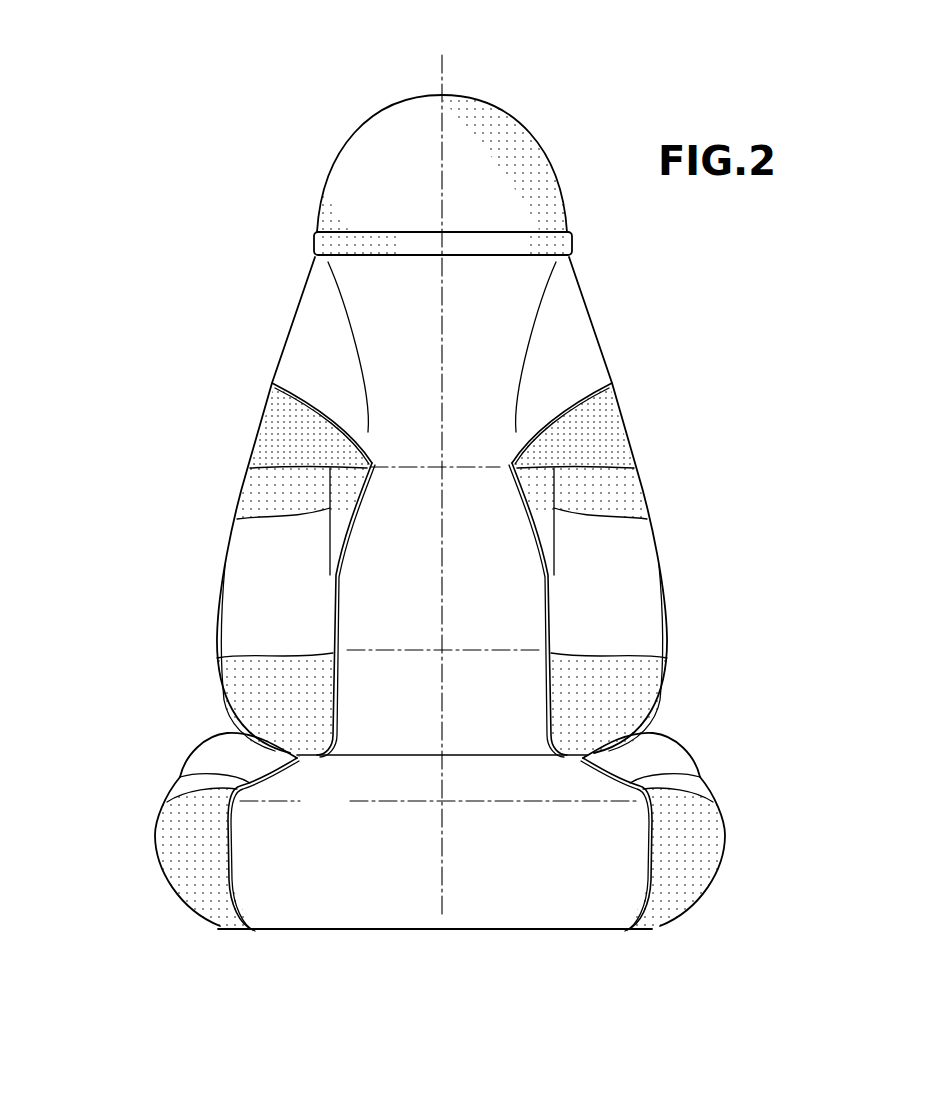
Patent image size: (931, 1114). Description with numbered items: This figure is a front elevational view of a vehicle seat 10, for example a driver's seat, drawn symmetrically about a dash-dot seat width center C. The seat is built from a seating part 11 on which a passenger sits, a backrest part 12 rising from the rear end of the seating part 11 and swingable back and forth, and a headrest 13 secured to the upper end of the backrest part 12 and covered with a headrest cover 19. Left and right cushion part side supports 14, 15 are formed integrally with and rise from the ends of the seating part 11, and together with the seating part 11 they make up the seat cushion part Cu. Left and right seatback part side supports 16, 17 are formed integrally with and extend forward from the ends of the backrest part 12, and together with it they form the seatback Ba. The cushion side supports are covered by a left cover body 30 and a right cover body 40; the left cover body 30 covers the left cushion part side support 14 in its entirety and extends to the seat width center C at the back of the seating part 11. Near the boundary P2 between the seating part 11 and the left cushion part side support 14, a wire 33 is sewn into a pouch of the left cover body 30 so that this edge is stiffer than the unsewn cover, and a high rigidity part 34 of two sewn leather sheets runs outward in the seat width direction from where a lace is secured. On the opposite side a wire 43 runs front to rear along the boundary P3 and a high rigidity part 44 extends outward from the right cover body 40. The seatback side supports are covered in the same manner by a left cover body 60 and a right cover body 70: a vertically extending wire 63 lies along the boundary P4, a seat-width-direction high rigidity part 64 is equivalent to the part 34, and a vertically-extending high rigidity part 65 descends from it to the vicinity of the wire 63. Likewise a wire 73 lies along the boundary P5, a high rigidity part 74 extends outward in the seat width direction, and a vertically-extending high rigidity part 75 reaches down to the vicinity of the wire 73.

The vehicle seat 10 is at (178, 115).
The seating part 11 is at (388, 873).
The backrest part 12 is at (505, 322).
The headrest 13 is at (392, 177).
The left cushion part side support 14 is at (675, 750).
The right cushion part side support 15 is at (208, 748).
The left seatback part side support 16 is at (637, 600).
The right seatback part side support 17 is at (247, 598).
The headrest cover 19 is at (501, 157).
The left cover body 30 is at (702, 890).
The wire 33 is at (607, 780).
The high rigidity part extending in the seat width direction 34 is at (683, 772).
The right cover body 40 is at (177, 888).
The wire 43 is at (273, 780).
The high rigidity part 44 is at (195, 770).
The left cover body 60 is at (641, 495).
The wire 63 is at (657, 662).
The high rigidity part extending in the seat width direction 64 is at (603, 450).
The vertically-extending high rigidity part 65 is at (600, 515).
The right cover body 70 is at (243, 490).
The wire 73 is at (225, 658).
The seat-width-direction high rigidity part 74 is at (285, 468).
The vertically-extending high rigidity part 75 is at (283, 513).
The seat width center C is at (443, 72).
The seatback Ba is at (442, 398).
The seat cushion part Cu is at (440, 854).
The boundary P2 is at (558, 786).
The boundary P3 is at (440, 785).
The boundary P4 is at (520, 579).
The boundary P5 is at (358, 579).